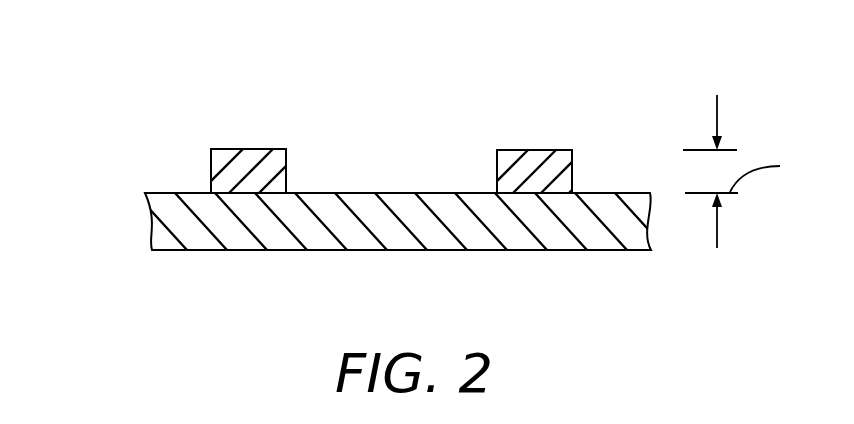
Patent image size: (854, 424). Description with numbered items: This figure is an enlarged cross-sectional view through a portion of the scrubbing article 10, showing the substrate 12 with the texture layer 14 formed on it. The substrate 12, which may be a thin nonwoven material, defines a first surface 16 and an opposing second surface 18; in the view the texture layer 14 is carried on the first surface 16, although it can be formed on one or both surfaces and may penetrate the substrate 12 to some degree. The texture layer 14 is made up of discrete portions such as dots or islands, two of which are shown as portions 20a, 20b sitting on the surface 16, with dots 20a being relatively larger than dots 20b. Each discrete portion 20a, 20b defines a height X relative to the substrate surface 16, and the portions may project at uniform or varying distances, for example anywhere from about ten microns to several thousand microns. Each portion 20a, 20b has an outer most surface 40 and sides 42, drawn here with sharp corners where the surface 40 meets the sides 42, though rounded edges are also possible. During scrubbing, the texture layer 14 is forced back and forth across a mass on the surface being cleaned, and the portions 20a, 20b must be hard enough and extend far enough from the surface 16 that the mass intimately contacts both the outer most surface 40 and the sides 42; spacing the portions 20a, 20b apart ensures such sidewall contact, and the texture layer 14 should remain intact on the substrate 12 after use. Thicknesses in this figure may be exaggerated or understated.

The scrubbing article 10 is at (100, 105).
The substrate 12 is at (200, 262).
The texture layer 14 is at (461, 86).
The first surface 16 is at (163, 191).
The second surface 18 is at (562, 251).
The discrete portion 20a is at (235, 136).
The discrete portion 20b is at (518, 136).
The outer most surface 40 is at (262, 148).
The sides 42 is at (210, 168).